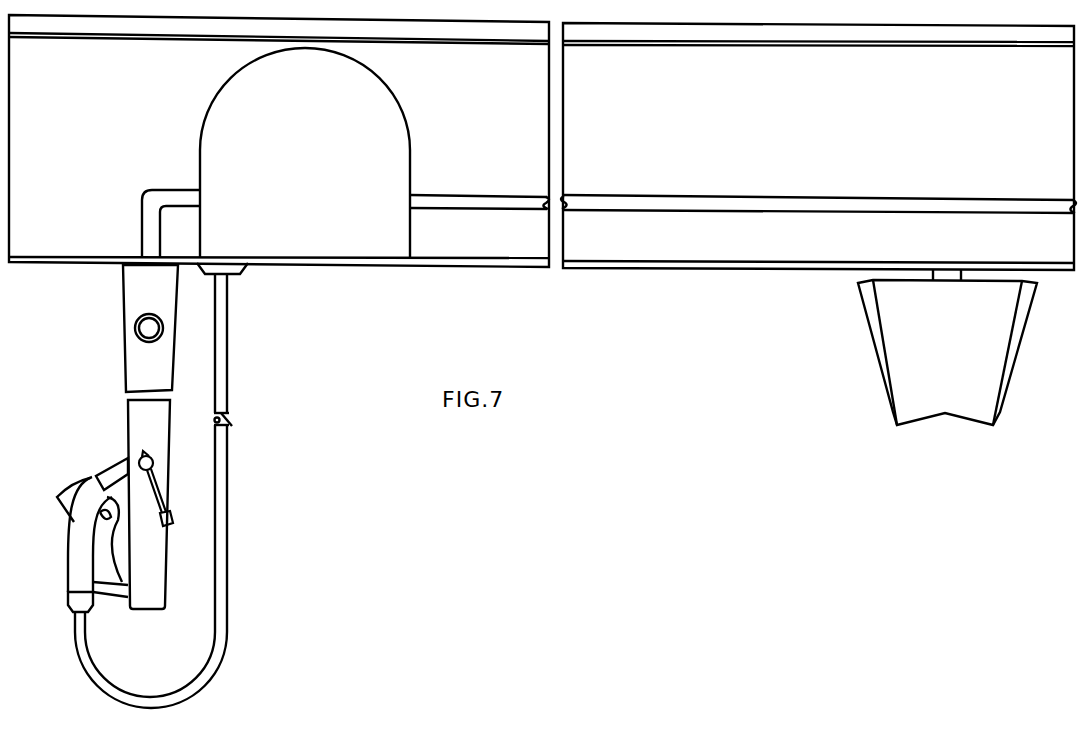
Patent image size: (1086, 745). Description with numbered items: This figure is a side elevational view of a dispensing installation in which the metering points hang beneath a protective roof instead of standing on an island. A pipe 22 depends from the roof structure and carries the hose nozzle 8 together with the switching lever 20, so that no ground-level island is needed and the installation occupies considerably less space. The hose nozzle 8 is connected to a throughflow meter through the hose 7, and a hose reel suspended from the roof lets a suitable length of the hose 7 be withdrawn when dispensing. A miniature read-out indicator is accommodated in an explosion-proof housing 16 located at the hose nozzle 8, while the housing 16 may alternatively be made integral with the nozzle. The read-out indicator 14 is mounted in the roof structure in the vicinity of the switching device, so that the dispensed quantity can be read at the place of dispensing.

The hose 7 is at (222, 437).
The hose nozzle 8 is at (77, 566).
The read-out indicator 14 is at (893, 341).
The explosion-proof housing 16 is at (130, 405).
The switching lever 20 is at (158, 480).
The pipe 22 is at (138, 408).